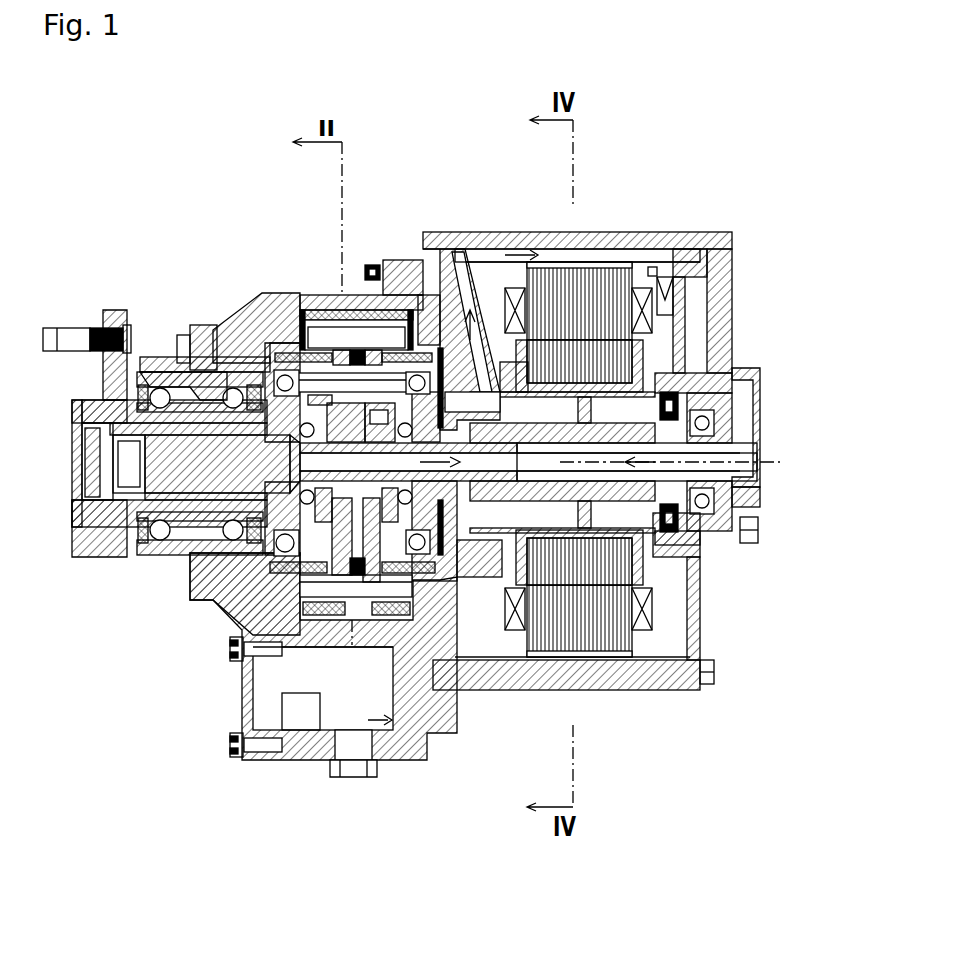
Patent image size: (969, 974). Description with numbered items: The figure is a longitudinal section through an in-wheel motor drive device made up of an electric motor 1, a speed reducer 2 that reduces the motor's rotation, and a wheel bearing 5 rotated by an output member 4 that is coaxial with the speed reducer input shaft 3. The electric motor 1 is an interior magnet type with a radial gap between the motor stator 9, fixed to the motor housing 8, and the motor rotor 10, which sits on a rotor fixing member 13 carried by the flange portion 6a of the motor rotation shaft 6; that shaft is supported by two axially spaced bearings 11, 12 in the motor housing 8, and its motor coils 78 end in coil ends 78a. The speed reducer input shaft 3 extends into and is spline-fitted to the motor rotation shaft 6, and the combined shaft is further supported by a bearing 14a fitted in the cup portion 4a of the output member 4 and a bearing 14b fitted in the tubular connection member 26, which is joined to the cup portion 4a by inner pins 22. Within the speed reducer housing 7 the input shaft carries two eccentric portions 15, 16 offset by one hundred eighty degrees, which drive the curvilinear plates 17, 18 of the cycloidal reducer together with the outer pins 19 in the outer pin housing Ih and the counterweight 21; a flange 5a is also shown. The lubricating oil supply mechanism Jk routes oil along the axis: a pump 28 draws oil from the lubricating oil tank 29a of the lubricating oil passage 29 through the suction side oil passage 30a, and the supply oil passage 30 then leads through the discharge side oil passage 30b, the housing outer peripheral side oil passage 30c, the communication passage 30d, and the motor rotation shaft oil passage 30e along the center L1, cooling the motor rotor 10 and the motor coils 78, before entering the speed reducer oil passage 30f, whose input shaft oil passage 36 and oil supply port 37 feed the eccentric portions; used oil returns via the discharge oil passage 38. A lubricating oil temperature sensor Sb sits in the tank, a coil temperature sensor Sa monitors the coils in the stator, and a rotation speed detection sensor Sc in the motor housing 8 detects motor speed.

The electric motor 1 is at (589, 701).
The speed reducer 2 is at (248, 292).
The speed reducer input shaft 3 is at (177, 483).
The output member 4 is at (143, 482).
The cup portion 4a is at (238, 607).
The wheel bearing 5 is at (80, 298).
The flange 5a is at (112, 417).
The motor rotation shaft 6 is at (750, 540).
The flange portion 6a is at (660, 540).
The speed reducer housing 7 is at (330, 310).
The motor housing 8 is at (595, 262).
The motor stator 9 is at (620, 266).
The motor rotor 10 is at (660, 368).
The bearing 11 is at (705, 405).
The bearing 12 is at (505, 600).
The rotor fixing member 13 is at (642, 572).
The bearing 14a is at (183, 347).
The bearing 14b is at (453, 627).
The eccentric portion 15 is at (218, 405).
The eccentric portion 16 is at (405, 640).
The curvilinear plate 17 is at (240, 650).
The curvilinear plate 18 is at (362, 327).
The outer pins 19 is at (298, 662).
The counterweight 21 is at (396, 330).
The inner pins 22 is at (262, 397).
The tubular connection member 26 is at (462, 612).
The pump 28 is at (482, 300).
The lubricating oil passage 29 is at (330, 722).
The lubricating oil tank 29a is at (380, 715).
The supply oil passage 30 is at (520, 250).
The suction side oil passage 30a is at (470, 600).
The discharge side oil passage 30b is at (462, 300).
The housing outer peripheral side oil passage 30c is at (548, 262).
The communication passage 30d is at (745, 407).
The motor rotation shaft oil passage 30e is at (673, 452).
The speed reducer oil passage 30f is at (118, 462).
The input shaft oil passage 36 is at (742, 494).
The oil supply port 37 is at (150, 417).
The discharge oil passage 38 is at (238, 746).
The motor coils 78 is at (680, 330).
The coil end 78a is at (667, 300).
The outer pin housing Ih is at (325, 300).
The lubricating oil supply mechanism Jk is at (417, 330).
The center of the motor rotation shaft L1 is at (686, 462).
The coil temperature sensor Sa is at (655, 320).
The lubricating oil temperature sensor Sb is at (302, 722).
The rotation speed detection sensor Sc is at (697, 420).